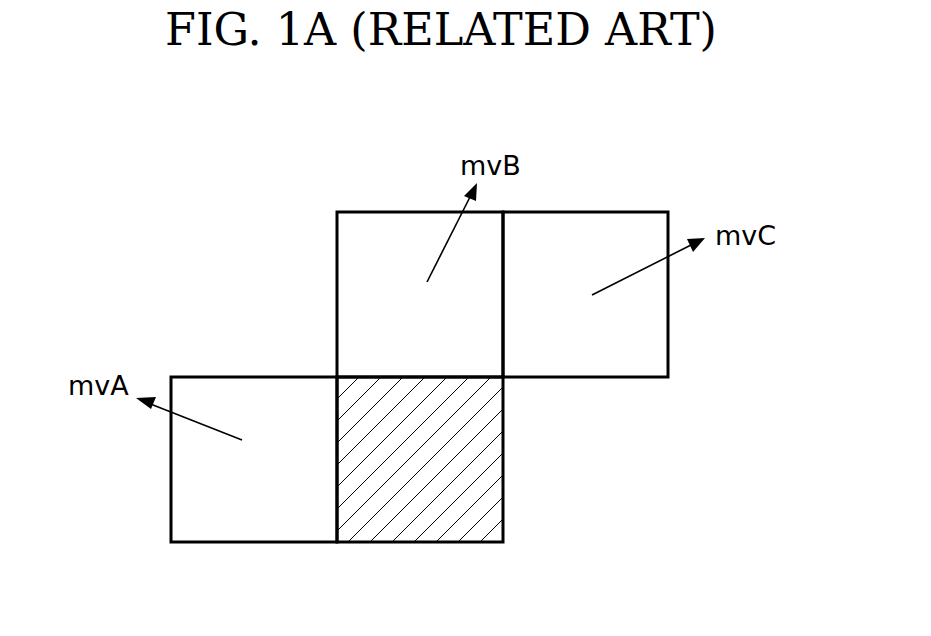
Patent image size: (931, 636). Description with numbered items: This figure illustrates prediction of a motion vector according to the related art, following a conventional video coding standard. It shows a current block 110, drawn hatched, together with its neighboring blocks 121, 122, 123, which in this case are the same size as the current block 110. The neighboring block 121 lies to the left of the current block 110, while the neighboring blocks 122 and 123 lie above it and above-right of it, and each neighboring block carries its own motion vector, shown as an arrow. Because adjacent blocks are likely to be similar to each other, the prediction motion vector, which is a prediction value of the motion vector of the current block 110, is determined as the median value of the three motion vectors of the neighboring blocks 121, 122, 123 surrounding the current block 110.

The current block 110 is at (503, 461).
The neighboring block 121 is at (242, 377).
The neighboring block 122 is at (392, 212).
The neighboring block 123 is at (593, 212).